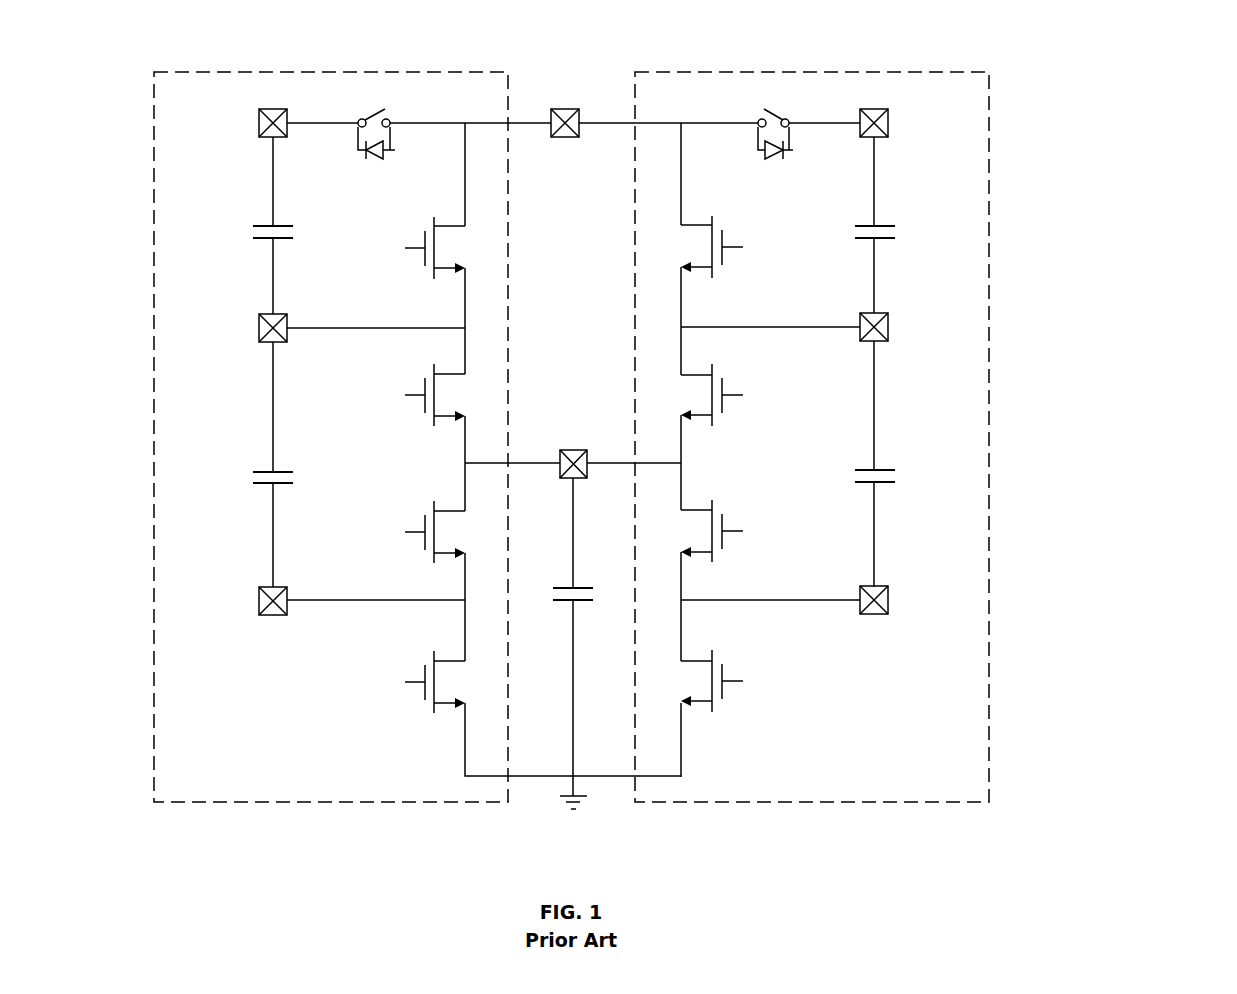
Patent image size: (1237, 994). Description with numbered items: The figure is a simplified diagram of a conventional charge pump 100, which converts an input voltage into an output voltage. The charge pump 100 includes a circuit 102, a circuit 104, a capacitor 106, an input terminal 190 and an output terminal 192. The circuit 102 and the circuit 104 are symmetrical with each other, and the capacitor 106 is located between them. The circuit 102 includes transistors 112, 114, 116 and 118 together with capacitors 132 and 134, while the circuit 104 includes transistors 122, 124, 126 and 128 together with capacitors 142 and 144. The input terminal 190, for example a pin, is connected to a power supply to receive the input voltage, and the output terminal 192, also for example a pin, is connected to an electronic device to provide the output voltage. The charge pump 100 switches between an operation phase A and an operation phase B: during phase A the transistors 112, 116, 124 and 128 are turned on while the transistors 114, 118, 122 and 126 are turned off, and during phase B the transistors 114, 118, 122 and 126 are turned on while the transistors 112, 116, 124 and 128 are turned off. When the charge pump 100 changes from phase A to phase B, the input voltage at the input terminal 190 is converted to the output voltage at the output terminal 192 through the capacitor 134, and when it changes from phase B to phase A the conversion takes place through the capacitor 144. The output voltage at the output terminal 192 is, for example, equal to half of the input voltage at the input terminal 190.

The charge pump 100 is at (1164, 111).
The circuit 102 is at (154, 462).
The circuit 104 is at (990, 384).
The capacitor 106 is at (562, 602).
The transistor 112 is at (424, 239).
The transistor 114 is at (424, 386).
The transistor 116 is at (424, 523).
The transistor 118 is at (424, 673).
The transistor 122 is at (724, 232).
The transistor 124 is at (724, 382).
The transistor 126 is at (724, 518).
The transistor 128 is at (724, 667).
The capacitor 132 is at (279, 225).
The capacitor 134 is at (280, 471).
The capacitor 142 is at (858, 225).
The capacitor 144 is at (857, 470).
The input terminal 190 is at (580, 110).
The output terminal 192 is at (561, 452).